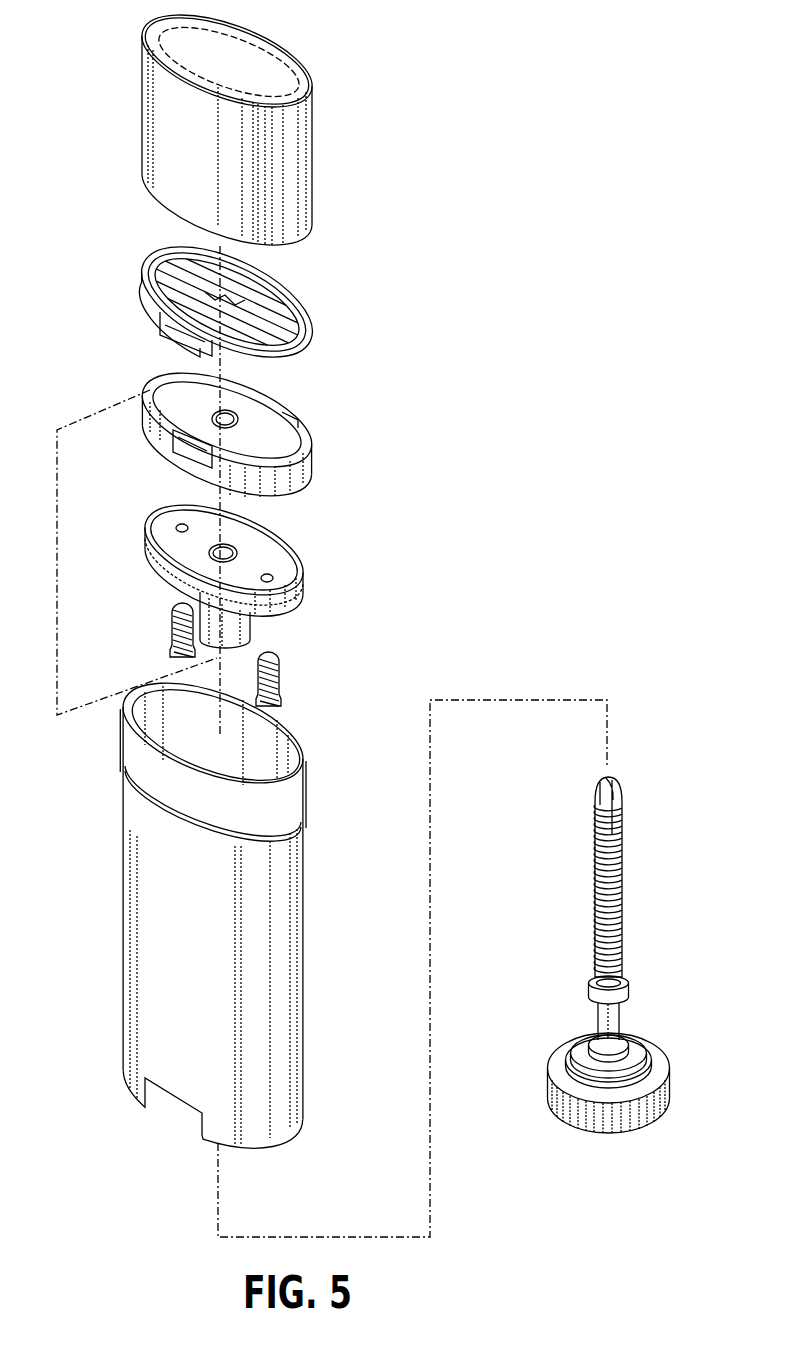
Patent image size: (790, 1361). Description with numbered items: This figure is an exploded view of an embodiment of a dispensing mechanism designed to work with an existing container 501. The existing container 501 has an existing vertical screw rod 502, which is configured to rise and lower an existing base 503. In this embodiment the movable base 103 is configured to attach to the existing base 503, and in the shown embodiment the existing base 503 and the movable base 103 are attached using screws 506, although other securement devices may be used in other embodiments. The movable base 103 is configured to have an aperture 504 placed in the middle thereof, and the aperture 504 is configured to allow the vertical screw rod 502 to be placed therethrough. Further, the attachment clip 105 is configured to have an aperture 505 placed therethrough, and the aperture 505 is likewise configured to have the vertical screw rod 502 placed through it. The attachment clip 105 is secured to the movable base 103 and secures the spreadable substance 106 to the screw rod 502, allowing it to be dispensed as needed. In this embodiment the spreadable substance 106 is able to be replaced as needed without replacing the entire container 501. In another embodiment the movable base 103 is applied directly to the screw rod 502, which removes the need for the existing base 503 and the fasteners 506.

The spreadable substance 106 is at (313, 143).
The aperture 505 is at (272, 288).
The attachment clip 105 is at (313, 328).
The aperture 504 is at (237, 414).
The movable base 103 is at (311, 452).
The existing base 503 is at (304, 580).
The screws 506 is at (170, 633).
The existing container 501 is at (132, 803).
The vertical screw rod 502 is at (623, 913).